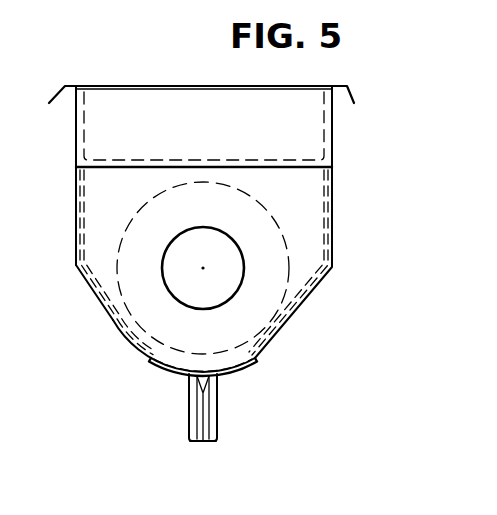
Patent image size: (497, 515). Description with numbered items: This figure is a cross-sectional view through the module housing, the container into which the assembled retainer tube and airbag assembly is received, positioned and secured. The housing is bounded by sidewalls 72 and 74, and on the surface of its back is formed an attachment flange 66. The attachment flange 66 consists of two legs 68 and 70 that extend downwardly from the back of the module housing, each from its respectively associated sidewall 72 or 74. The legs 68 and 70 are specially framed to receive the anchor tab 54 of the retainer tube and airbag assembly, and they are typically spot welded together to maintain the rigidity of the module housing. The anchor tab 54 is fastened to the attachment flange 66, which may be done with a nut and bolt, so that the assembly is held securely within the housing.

The anchor tab 54 is at (203, 445).
The attachment flange 66 is at (189, 433).
The leg 68 is at (140, 359).
The leg 70 is at (256, 315).
The sidewall 72 is at (75, 251).
The sidewall 74 is at (333, 212).